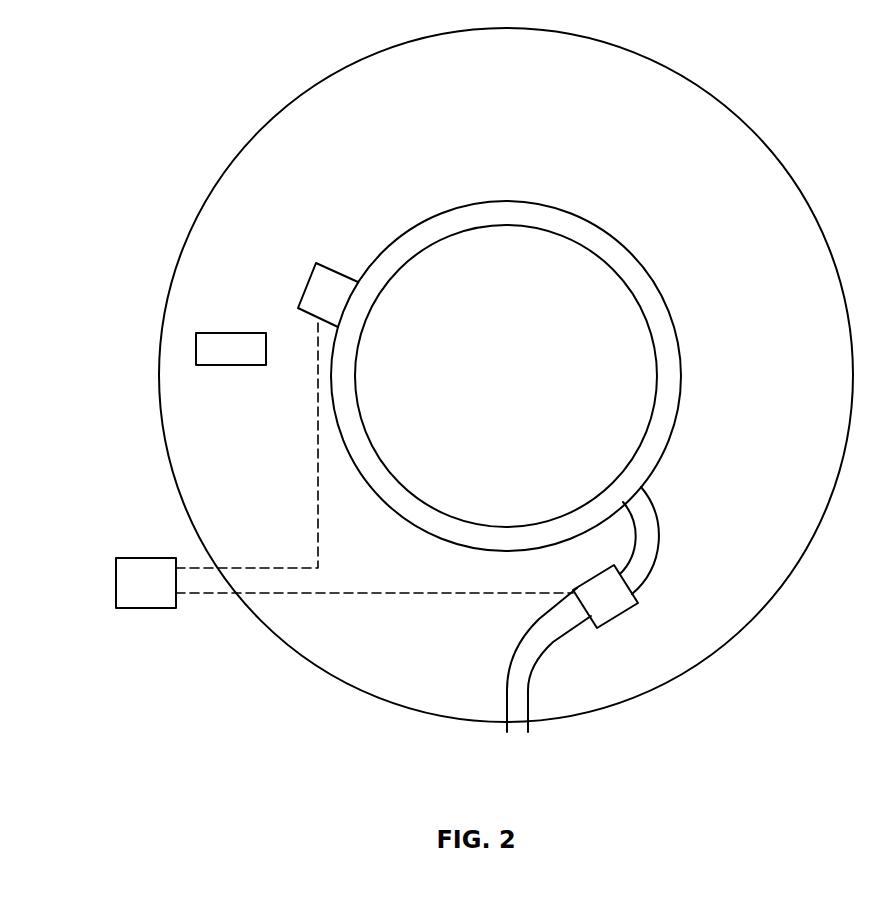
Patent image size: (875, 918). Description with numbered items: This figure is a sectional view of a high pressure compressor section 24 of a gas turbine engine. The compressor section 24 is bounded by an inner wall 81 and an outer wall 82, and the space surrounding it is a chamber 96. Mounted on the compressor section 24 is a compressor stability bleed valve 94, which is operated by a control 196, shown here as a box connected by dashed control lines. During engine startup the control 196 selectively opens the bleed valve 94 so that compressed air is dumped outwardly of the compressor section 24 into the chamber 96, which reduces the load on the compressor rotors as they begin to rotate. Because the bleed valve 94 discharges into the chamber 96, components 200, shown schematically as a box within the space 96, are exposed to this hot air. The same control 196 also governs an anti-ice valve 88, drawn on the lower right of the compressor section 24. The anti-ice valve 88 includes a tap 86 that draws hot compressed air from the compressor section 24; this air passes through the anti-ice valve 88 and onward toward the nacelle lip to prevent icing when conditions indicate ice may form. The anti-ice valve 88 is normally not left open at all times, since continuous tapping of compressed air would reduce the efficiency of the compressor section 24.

The compressor section 24 is at (487, 250).
The inner wall 81 is at (418, 513).
The outer wall 82 is at (345, 683).
The tap 86 is at (652, 504).
The anti-ice valve 88 is at (612, 607).
The compressor stability bleed valve 94 is at (332, 281).
The chamber 96 is at (312, 155).
The control 196 is at (137, 570).
The components 200 is at (208, 345).